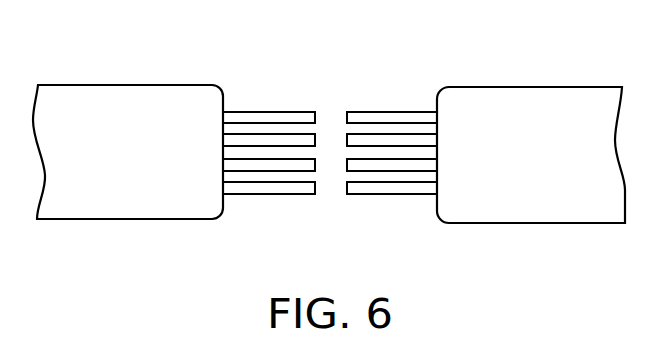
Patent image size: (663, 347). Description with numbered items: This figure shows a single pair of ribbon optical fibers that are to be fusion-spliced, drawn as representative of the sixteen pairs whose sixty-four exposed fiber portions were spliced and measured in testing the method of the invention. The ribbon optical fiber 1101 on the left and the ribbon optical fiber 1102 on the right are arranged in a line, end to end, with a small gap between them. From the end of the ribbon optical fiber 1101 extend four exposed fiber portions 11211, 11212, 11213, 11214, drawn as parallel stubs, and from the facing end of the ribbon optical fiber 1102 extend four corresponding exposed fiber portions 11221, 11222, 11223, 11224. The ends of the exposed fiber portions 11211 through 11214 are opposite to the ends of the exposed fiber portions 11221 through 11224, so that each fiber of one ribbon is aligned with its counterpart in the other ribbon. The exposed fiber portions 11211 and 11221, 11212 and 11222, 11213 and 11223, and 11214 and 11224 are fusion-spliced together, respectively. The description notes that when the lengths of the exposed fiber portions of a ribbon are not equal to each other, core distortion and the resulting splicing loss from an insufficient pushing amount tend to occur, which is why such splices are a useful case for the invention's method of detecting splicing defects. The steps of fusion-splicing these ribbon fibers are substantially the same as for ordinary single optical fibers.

The ribbon optical fiber 1101 is at (113, 212).
The ribbon optical fiber 1102 is at (519, 212).
The exposed fiber portion 11211 is at (294, 118).
The exposed fiber portion 11212 is at (273, 140).
The exposed fiber portion 11213 is at (293, 165).
The exposed fiber portion 11214 is at (244, 188).
The exposed fiber portion 11221 is at (366, 118).
The exposed fiber portion 11222 is at (391, 140).
The exposed fiber portion 11223 is at (378, 165).
The exposed fiber portion 11224 is at (404, 190).